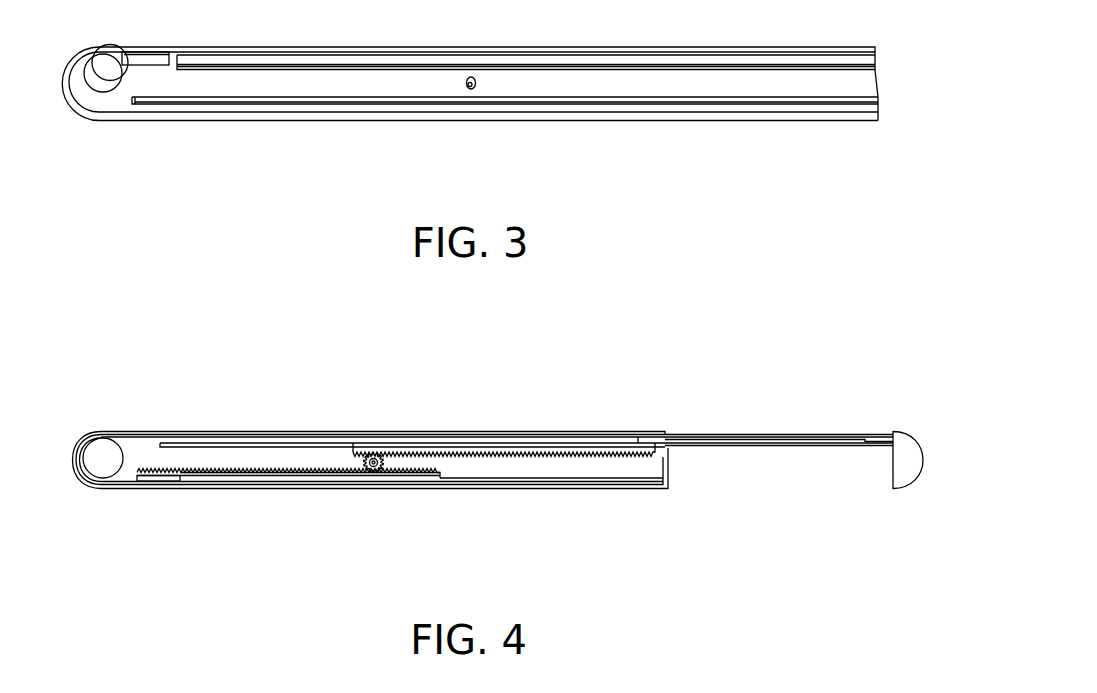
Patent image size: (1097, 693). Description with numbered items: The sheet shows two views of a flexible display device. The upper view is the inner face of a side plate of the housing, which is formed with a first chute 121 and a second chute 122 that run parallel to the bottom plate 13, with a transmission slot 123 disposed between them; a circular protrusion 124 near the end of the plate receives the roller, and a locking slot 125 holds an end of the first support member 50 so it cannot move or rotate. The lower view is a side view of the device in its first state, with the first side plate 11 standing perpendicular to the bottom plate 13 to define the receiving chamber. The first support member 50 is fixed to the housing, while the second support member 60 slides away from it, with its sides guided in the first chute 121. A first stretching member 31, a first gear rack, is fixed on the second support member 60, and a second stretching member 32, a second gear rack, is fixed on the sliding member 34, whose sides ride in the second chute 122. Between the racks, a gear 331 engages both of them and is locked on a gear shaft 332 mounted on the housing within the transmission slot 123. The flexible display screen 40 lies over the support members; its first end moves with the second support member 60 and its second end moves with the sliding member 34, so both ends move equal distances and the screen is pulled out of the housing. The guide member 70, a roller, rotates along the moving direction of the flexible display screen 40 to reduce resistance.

In FIG. 3, the first chute 121 is at (345, 62).
In FIG. 3, the second chute 122 is at (263, 104).
In FIG. 3, the transmission slot 123 is at (472, 89).
In FIG. 3, the circular protrusion 124 is at (107, 72).
In FIG. 3, the locking slot 125 is at (150, 63).
In FIG. 4, the first side plate 11 is at (261, 461).
In FIG. 4, the bottom plate 13 is at (445, 479).
In FIG. 4, the first stretching member 31 is at (476, 452).
In FIG. 4, the second stretching member 32 is at (298, 473).
In FIG. 4, the gear 331 is at (377, 471).
In FIG. 4, the gear shaft 332 is at (375, 452).
In FIG. 4, the sliding member 34 is at (158, 481).
In FIG. 4, the flexible display screen 40 is at (729, 434).
In FIG. 4, the first support member 50 is at (199, 433).
In FIG. 4, the second support member 60 is at (908, 455).
In FIG. 4, the guide member 70 is at (102, 458).